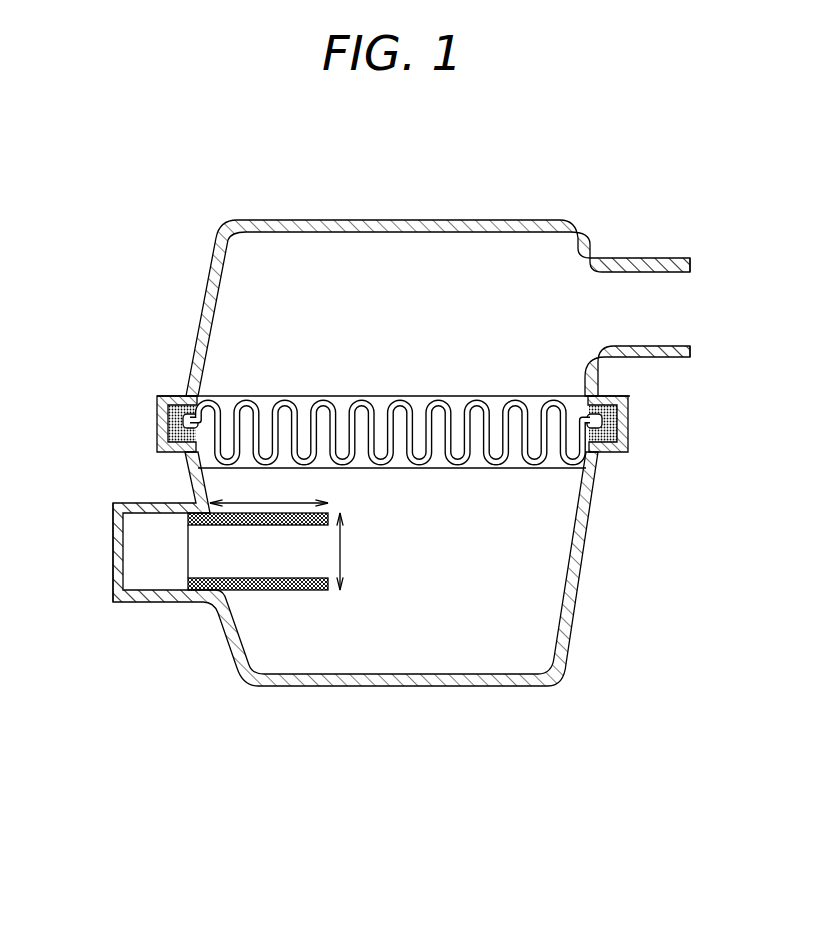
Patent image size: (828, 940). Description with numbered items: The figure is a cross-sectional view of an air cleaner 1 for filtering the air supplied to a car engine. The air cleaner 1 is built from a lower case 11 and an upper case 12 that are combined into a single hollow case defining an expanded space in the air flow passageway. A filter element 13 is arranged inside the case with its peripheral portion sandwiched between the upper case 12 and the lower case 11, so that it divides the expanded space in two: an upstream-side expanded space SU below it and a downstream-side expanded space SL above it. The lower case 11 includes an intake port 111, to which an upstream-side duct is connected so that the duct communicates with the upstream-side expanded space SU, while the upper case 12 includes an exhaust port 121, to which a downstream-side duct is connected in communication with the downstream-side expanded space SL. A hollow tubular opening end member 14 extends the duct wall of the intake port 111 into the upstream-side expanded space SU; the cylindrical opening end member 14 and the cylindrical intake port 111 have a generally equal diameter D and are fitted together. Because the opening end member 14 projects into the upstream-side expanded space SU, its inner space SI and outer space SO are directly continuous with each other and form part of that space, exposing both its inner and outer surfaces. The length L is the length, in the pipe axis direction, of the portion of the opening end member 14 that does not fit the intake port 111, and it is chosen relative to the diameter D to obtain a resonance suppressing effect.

The air cleaner 1 is at (384, 785).
The lower case 11 is at (571, 607).
The intake port 111 is at (136, 603).
The upper case 12 is at (505, 215).
The exhaust port 121 is at (650, 257).
The filter element 13 is at (519, 471).
The opening end member 14 is at (303, 596).
The length L is at (269, 492).
The diameter D is at (350, 551).
The downstream-side expanded space SL is at (390, 316).
The inner space SI is at (185, 596).
The outer space SO is at (270, 617).
The upstream-side expanded space SU is at (468, 630).